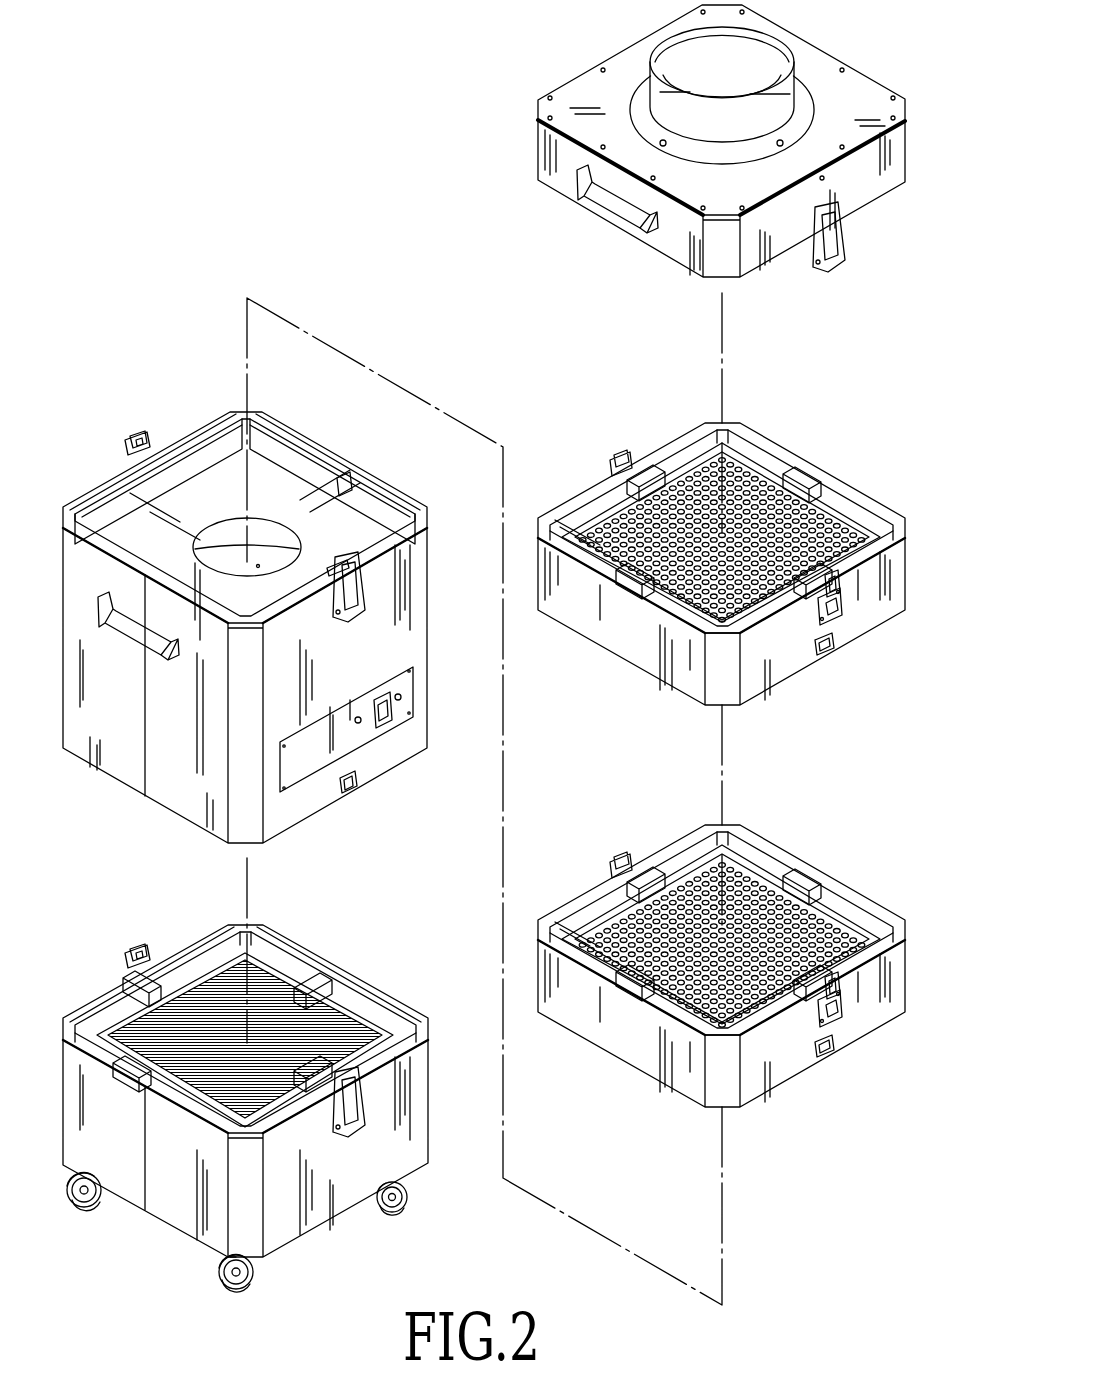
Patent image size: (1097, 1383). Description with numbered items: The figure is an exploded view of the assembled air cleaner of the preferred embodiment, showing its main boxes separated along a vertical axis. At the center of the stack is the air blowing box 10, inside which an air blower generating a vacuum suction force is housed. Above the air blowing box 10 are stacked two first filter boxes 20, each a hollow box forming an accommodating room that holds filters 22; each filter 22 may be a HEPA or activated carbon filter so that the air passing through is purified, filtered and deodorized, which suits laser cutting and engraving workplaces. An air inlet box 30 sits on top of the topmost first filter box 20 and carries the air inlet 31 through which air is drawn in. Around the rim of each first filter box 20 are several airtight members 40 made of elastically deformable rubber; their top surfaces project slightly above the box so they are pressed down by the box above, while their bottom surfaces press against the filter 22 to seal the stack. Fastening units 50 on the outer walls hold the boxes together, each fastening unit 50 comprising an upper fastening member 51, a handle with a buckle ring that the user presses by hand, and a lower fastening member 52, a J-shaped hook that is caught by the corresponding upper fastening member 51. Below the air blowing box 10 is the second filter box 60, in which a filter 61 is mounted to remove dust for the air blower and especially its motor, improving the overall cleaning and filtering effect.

The air blowing box 10 is at (188, 422).
The first filter box 20 is at (570, 484).
The filter 22 is at (744, 482).
The air inlet box 30 is at (647, 138).
The air inlet 31 is at (675, 58).
The airtight member 40 is at (642, 462).
The fastening unit 50 is at (891, 809).
The upper fastening member 51 is at (838, 985).
The lower fastening member 52 is at (835, 643).
The second filter box 60 is at (245, 1066).
The filter 61 is at (274, 998).